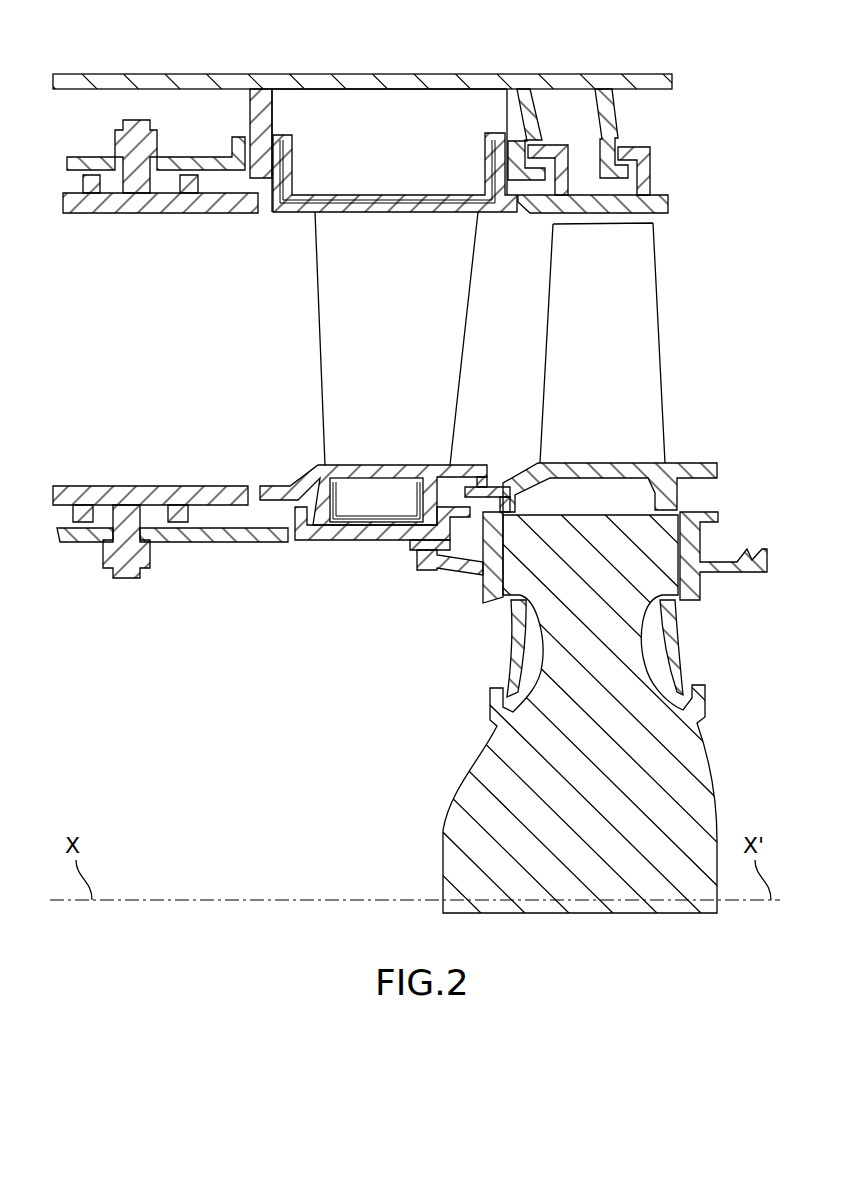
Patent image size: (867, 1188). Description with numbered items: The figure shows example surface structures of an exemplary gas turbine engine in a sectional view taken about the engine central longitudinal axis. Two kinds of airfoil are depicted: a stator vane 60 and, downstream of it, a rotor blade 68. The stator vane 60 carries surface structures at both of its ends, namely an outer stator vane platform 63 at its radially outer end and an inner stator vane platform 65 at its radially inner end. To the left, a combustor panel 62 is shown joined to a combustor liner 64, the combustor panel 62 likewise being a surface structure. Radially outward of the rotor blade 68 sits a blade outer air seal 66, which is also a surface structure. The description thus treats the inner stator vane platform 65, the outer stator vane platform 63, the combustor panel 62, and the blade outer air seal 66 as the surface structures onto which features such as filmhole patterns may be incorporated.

The stator vane 60 is at (345, 331).
The combustor panel 62 is at (160, 485).
The outer stator vane platform 63 is at (287, 215).
The combustor liner 64 is at (218, 545).
The inner stator vane platform 65 is at (303, 483).
The blade outer air seal (BOAS) 66 is at (540, 215).
The rotor blade 68 is at (633, 291).